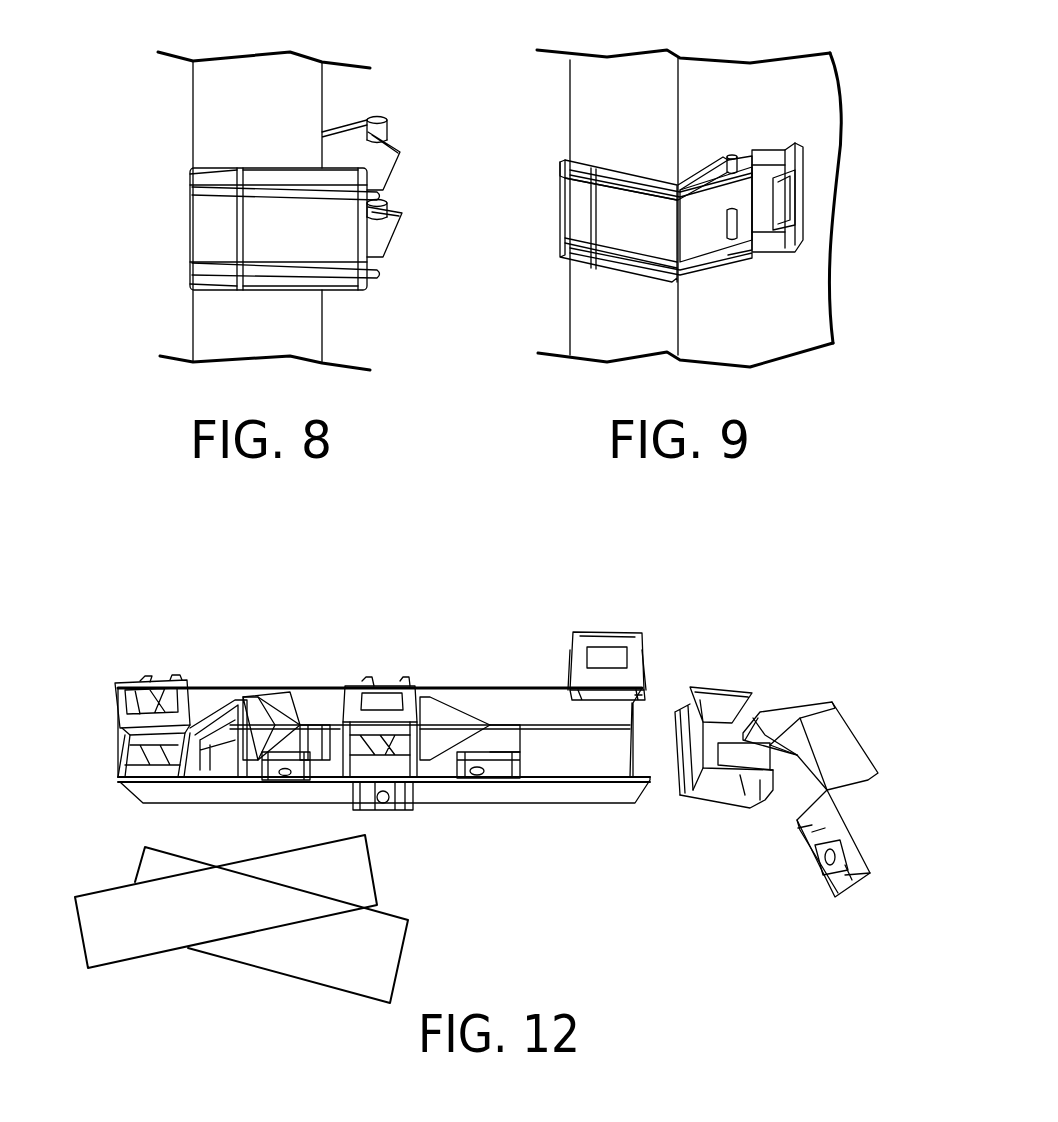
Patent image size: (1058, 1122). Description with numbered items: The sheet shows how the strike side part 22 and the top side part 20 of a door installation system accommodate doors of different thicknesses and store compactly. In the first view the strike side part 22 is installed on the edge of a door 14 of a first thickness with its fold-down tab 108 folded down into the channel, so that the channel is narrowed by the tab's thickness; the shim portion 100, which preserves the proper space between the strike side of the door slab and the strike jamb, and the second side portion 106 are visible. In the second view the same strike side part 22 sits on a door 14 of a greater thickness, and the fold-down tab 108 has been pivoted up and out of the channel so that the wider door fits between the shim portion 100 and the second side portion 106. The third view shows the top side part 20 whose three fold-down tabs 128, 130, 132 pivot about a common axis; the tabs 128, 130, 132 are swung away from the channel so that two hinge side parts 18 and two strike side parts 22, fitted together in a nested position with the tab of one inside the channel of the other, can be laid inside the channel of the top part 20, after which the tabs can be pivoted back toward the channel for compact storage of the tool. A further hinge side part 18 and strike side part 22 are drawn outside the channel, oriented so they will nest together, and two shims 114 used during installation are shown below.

In FIG. 8, the pole 14 is at (263, 90).
In FIG. 9, the pole 14 is at (622, 87).
In FIG. 12, the hinge side part 18 is at (287, 745).
In FIG. 12, the top side part 20 is at (510, 688).
In FIG. 8, the strike side part 22 is at (385, 95).
In FIG. 9, the strike side part 22 is at (702, 143).
In FIG. 12, the strike side part 22 is at (325, 718).
In FIG. 8, the shim portion 100 is at (203, 232).
In FIG. 9, the shim portion 100 is at (557, 210).
In FIG. 8, the second side portion 106 is at (398, 145).
In FIG. 9, the second side portion 106 is at (695, 227).
In FIG. 8, the fold-down tab 108 is at (393, 243).
In FIG. 9, the fold-down tab 108 is at (768, 253).
In FIG. 12, the shims 114 is at (195, 928).
In FIG. 12, the fold-down tab 128 is at (610, 633).
In FIG. 12, the fold-down tab 130 is at (355, 690).
In FIG. 12, the fold-down tab 132 is at (122, 697).